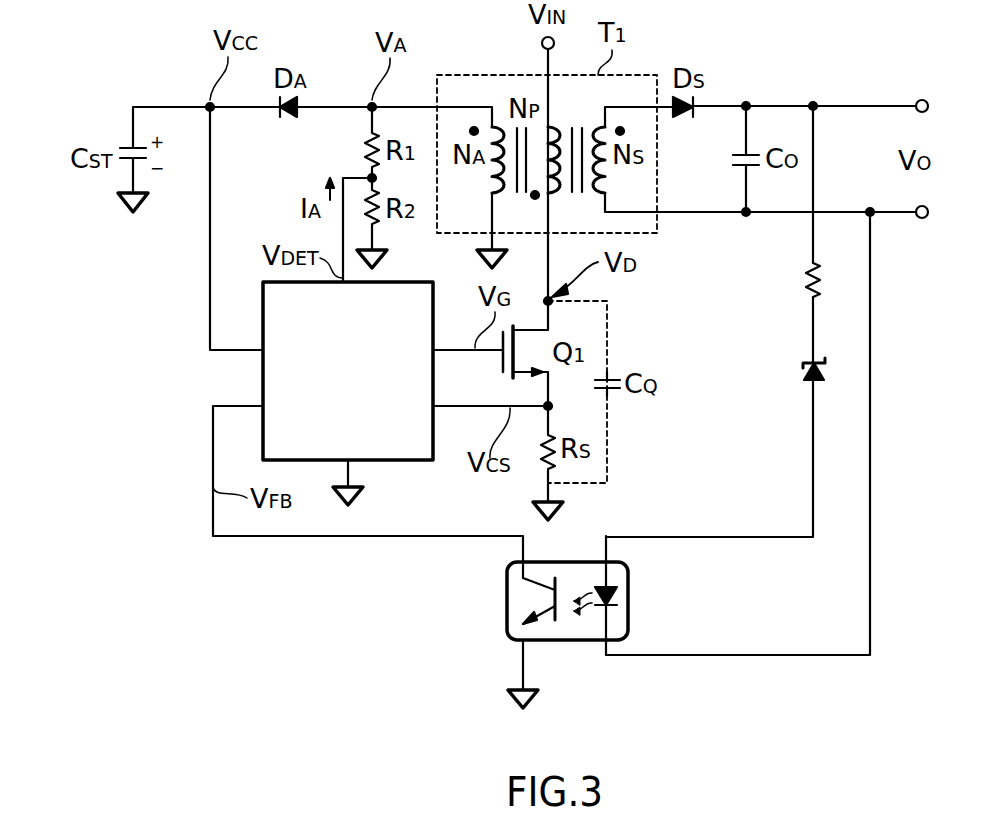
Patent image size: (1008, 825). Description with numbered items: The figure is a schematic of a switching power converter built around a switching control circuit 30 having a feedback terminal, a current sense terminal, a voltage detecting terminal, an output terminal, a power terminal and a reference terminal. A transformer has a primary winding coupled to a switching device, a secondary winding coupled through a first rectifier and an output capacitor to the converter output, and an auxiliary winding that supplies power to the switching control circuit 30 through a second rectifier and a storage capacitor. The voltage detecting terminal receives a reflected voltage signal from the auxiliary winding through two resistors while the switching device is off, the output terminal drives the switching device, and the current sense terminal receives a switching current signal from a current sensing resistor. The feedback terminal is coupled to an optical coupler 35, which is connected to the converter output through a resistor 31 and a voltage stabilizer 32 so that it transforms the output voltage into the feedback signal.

The switching control circuit 30 is at (400, 460).
The resistor 31 is at (833, 282).
The voltage stabilizer 32 is at (833, 374).
The optical coupler 35 is at (567, 585).